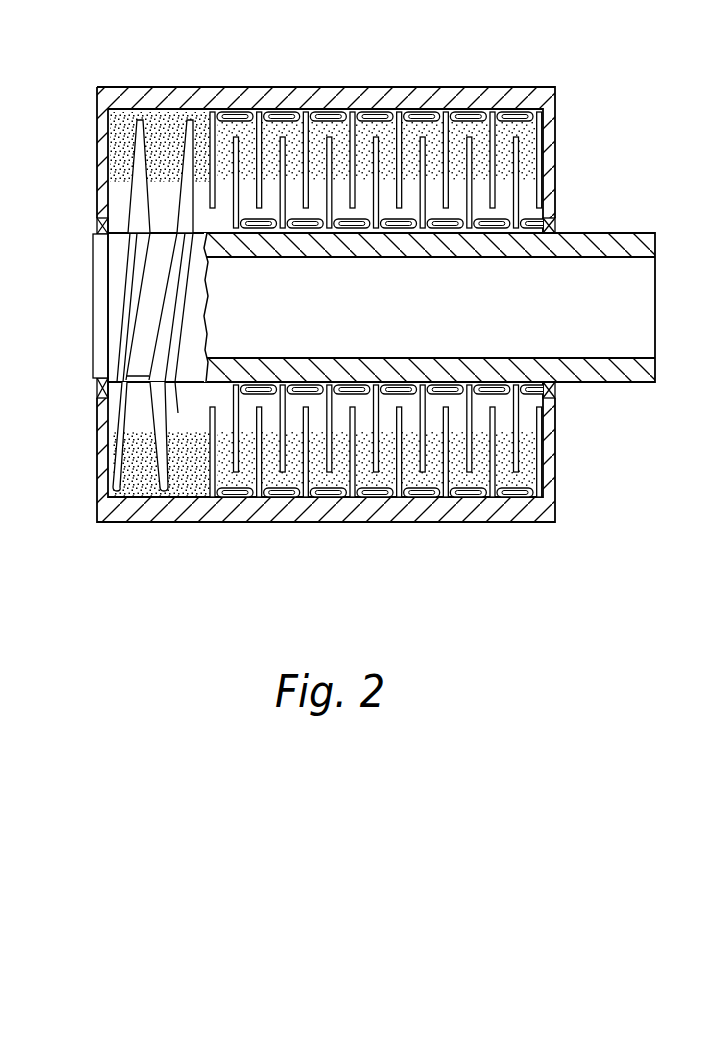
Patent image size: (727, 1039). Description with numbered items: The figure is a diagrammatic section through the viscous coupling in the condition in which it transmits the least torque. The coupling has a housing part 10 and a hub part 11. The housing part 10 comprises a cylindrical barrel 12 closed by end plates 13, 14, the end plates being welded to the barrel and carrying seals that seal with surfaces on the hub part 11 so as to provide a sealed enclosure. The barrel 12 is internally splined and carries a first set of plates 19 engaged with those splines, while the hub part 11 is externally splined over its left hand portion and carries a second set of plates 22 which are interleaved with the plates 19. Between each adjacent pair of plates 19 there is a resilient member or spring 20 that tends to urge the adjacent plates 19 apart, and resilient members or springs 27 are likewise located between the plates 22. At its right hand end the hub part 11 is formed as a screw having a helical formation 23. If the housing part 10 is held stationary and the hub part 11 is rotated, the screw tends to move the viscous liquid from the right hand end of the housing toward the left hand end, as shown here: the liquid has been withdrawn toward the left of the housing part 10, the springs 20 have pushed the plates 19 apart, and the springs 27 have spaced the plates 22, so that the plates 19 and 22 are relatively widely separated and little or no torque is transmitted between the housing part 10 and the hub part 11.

The housing part 10 is at (343, 292).
The hub part 11 is at (622, 234).
The cylindrical barrel 12 is at (282, 86).
The end plate 13 is at (553, 150).
The end plate 14 is at (102, 198).
The plates of first set 19 is at (497, 473).
The resilient members or springs 20 is at (375, 493).
The plates of second set 22 is at (428, 385).
The helical formation 23 is at (142, 153).
The resilient members or springs 27 is at (445, 228).